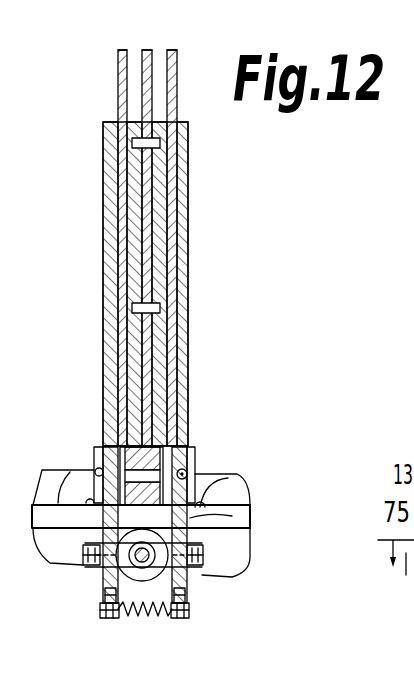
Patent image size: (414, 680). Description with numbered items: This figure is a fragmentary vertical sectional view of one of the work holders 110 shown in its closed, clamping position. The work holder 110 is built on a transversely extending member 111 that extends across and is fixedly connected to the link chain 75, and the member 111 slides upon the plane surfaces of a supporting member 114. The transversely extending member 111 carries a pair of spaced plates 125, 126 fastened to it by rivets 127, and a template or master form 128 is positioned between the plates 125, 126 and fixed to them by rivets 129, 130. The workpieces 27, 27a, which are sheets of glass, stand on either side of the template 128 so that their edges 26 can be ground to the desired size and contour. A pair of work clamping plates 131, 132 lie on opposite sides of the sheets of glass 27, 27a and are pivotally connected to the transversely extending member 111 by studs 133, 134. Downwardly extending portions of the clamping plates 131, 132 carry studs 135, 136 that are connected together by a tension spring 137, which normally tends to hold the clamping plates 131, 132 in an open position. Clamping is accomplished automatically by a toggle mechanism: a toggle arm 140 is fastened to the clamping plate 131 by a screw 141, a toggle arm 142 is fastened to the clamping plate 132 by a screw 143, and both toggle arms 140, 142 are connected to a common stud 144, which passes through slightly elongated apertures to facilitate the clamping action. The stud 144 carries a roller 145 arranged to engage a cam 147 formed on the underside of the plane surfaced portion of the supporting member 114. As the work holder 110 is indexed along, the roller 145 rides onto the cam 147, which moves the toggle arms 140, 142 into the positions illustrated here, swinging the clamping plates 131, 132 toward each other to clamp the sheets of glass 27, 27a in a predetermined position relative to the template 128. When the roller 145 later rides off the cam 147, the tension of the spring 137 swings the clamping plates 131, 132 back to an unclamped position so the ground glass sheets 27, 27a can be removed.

The edge 26 is at (173, 50).
The workpiece 27 is at (118, 76).
The workpiece 27a is at (173, 108).
The template or master form 128 is at (147, 95).
The rivet 129 is at (160, 143).
The rivet 130 is at (155, 309).
The work clamping plate 131 is at (112, 209).
The work clamping plate 132 is at (183, 202).
The plate 125 is at (132, 349).
The plate 126 is at (155, 354).
The work holder 110 is at (190, 404).
The rivet 127 is at (143, 475).
The transversely extending member 111 is at (193, 457).
The stud 133 is at (92, 470).
The stud 134 is at (250, 472).
The link chain 75 is at (230, 497).
The roller 145 is at (250, 513).
The supporting member 114 is at (235, 540).
The screw 143 is at (238, 565).
The cam 147 is at (82, 563).
The screw 141 is at (92, 551).
The toggle arm 140 is at (107, 573).
The toggle arm 142 is at (193, 568).
The stud 144 is at (193, 598).
The stud 135 is at (105, 620).
The stud 136 is at (182, 620).
The tension spring 137 is at (147, 620).